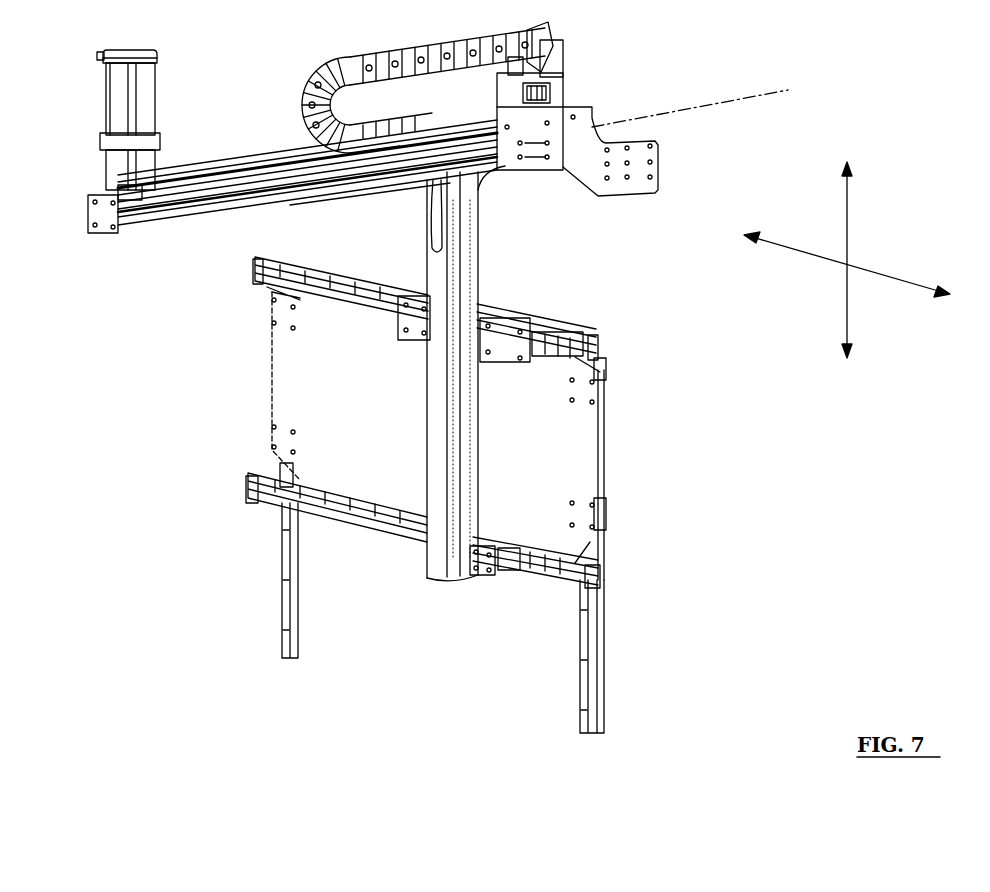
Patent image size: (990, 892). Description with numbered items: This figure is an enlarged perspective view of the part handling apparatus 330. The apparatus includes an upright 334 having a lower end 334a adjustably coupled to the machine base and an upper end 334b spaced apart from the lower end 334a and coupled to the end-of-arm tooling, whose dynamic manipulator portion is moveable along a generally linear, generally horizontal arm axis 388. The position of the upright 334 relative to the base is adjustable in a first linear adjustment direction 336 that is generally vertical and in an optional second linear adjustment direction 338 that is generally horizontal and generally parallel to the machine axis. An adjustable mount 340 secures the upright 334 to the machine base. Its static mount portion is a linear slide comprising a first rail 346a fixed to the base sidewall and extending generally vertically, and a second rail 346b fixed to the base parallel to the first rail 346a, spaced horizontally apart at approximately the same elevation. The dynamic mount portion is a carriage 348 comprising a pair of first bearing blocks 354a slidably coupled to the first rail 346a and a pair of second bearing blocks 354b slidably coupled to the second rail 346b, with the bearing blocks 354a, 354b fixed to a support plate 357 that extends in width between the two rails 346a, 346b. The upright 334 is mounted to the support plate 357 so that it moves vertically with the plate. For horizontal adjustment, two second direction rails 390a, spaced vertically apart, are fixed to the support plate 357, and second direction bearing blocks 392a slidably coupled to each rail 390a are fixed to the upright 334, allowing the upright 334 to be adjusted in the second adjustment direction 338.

The part handling apparatus 330 is at (876, 69).
The upright 334 is at (440, 389).
The lower end 334a is at (435, 557).
The upper end 334b is at (440, 196).
The first linear adjustment direction 336 is at (848, 207).
The second linear adjustment direction 338 is at (904, 283).
The adjustable mount 340 is at (650, 440).
The first rail 346a is at (280, 565).
The second rail 346b is at (590, 608).
The carriage 348 is at (196, 364).
The first bearing blocks 354a is at (270, 294).
The second bearing blocks 354b is at (602, 385).
The support plate 357 is at (370, 441).
The arm axis 388 is at (697, 108).
The second direction rails 390a is at (362, 287).
The second direction bearing blocks 392a is at (545, 322).